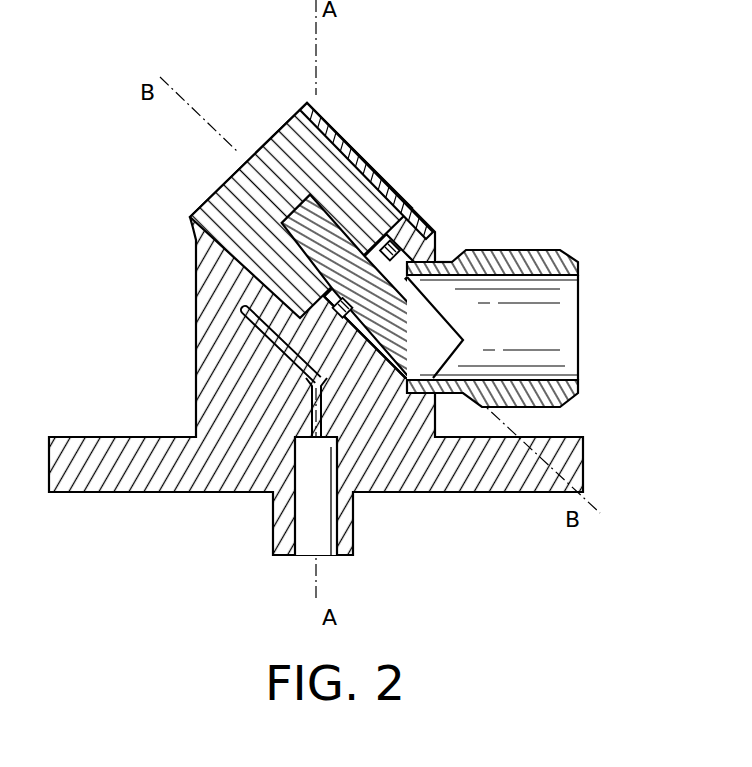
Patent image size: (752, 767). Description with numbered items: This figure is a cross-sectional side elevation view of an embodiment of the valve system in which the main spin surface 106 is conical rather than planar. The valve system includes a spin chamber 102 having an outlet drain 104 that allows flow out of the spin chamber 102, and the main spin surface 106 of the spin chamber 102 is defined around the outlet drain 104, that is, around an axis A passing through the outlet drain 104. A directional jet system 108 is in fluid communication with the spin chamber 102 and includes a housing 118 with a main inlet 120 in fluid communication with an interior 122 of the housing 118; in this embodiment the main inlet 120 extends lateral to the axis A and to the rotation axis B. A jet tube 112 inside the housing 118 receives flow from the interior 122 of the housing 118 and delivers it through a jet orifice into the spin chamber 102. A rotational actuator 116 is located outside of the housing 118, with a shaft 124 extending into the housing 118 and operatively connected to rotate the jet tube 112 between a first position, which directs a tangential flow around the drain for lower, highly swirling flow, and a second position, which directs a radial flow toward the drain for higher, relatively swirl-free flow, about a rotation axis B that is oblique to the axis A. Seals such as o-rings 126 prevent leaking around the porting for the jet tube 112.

The spin chamber 102 is at (258, 316).
The outlet drain 104 is at (330, 388).
The main spin surface 106 is at (262, 348).
The directional jet system 108 is at (383, 125).
The jet tube 112 is at (441, 263).
The rotational actuator 116 is at (246, 196).
The housing 118 is at (447, 262).
The main inlet 120 is at (563, 250).
The interior of the housing 122 is at (467, 303).
The shaft 124 is at (345, 238).
The o-rings 126 is at (398, 240).